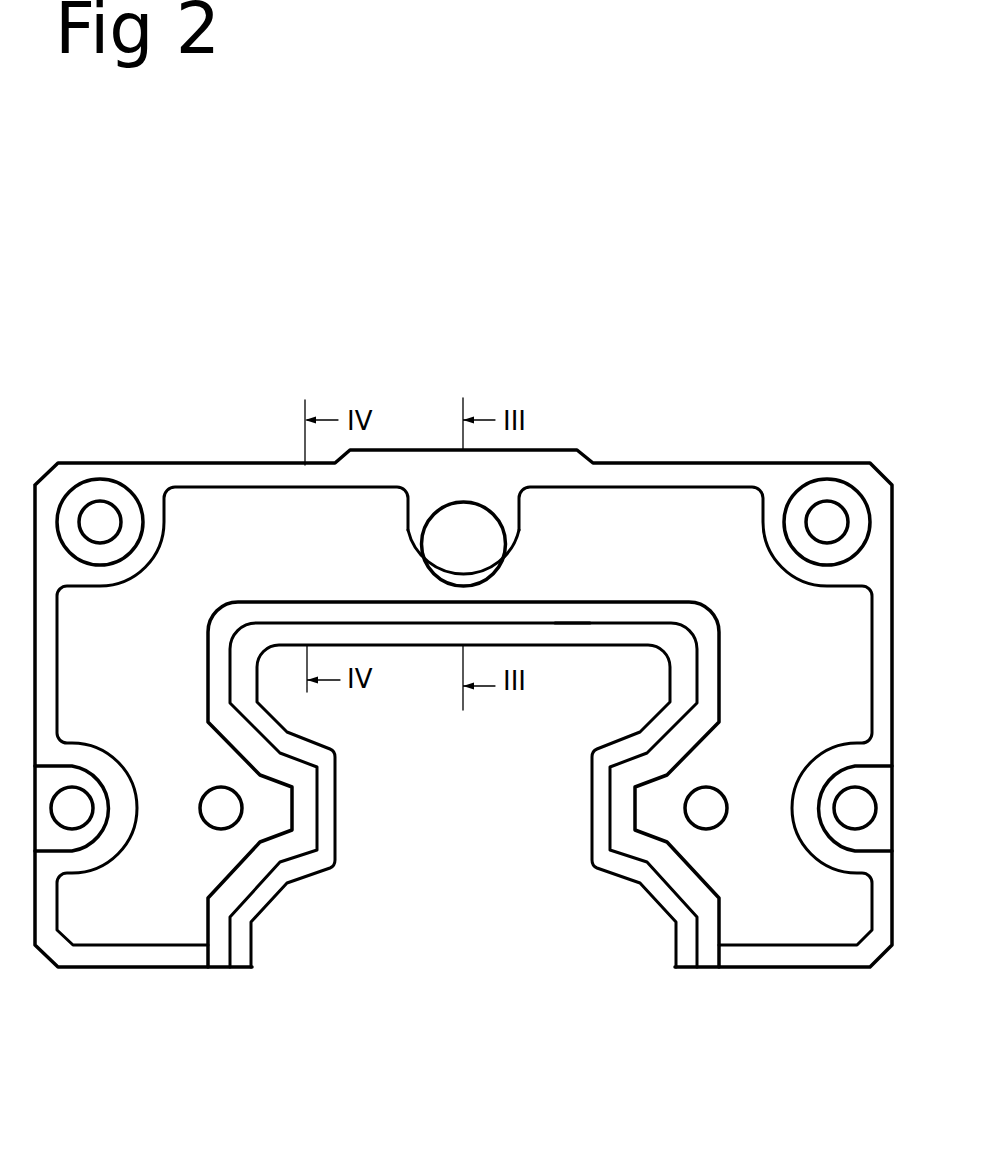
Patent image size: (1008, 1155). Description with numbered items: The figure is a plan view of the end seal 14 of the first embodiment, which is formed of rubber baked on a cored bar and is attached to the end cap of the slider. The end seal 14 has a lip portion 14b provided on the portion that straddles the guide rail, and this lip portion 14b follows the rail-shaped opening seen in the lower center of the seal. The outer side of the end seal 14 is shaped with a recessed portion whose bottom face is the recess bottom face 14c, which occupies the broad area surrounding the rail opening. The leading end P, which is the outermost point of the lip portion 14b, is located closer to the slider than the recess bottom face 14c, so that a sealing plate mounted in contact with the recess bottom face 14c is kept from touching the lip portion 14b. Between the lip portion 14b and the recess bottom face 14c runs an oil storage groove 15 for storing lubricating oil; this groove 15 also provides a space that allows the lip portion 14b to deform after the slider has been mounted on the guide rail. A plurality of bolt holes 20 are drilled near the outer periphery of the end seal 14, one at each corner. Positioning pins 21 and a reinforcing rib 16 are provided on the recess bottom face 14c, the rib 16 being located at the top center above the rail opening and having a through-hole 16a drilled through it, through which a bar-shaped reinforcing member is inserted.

The end seal 14 is at (743, 440).
The lip portion 14b is at (298, 870).
The recess bottom face 14c is at (302, 557).
The oil storage groove 15 is at (430, 612).
The rib 16 is at (522, 537).
The through-hole 16a is at (458, 515).
The bolt holes 20 is at (102, 512).
The positioning pins 21 is at (221, 817).
The leading end P is at (572, 624).